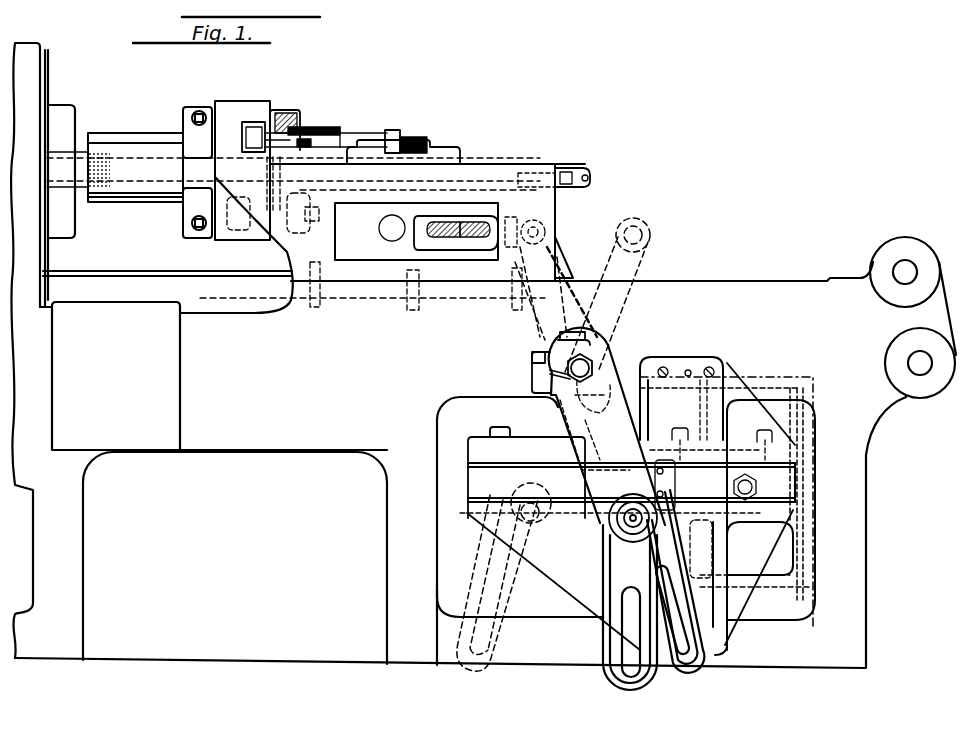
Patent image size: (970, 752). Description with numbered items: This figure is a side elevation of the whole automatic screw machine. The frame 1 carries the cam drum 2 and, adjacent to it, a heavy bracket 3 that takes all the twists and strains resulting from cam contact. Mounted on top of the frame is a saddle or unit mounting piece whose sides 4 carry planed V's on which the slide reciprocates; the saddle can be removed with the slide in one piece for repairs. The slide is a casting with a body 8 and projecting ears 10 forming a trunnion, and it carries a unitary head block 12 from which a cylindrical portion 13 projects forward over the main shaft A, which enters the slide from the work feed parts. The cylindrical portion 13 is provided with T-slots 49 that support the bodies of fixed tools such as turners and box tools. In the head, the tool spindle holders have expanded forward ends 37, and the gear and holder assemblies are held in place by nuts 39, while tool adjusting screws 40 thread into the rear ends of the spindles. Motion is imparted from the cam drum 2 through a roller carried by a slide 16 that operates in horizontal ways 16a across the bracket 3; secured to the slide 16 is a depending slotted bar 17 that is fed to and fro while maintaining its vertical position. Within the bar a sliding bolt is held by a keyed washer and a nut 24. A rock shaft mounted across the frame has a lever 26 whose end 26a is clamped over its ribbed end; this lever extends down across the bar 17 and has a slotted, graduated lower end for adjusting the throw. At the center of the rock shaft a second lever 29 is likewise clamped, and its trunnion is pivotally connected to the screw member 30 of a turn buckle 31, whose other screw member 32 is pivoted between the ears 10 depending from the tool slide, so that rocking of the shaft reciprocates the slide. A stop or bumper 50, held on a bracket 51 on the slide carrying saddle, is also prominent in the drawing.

The frame 1 is at (280, 422).
The cam drum 2 is at (773, 373).
The bracket 3 is at (743, 563).
The side 4 is at (550, 203).
The body 8 is at (447, 158).
The projecting ear 10 is at (373, 197).
The head block 12 is at (230, 105).
The cylindrical portion 13 is at (100, 137).
The slide 16 is at (665, 482).
The ways 16a is at (483, 458).
The slotted bar 17 is at (603, 623).
The nut 24 is at (620, 527).
The lever 26 is at (620, 415).
The end of lever 26a is at (568, 350).
The lever 29 is at (570, 277).
The screw member 30 is at (475, 208).
The turn buckle 31 is at (460, 240).
The screw member 32 is at (433, 232).
The expanded forward end 37 is at (187, 133).
The nut 39 is at (300, 108).
The tool adjusting screw 40 is at (320, 123).
The T-slot 49 is at (123, 200).
The stop or bumper 50 is at (360, 143).
The bracket 51 is at (400, 145).
The main shaft A is at (573, 172).